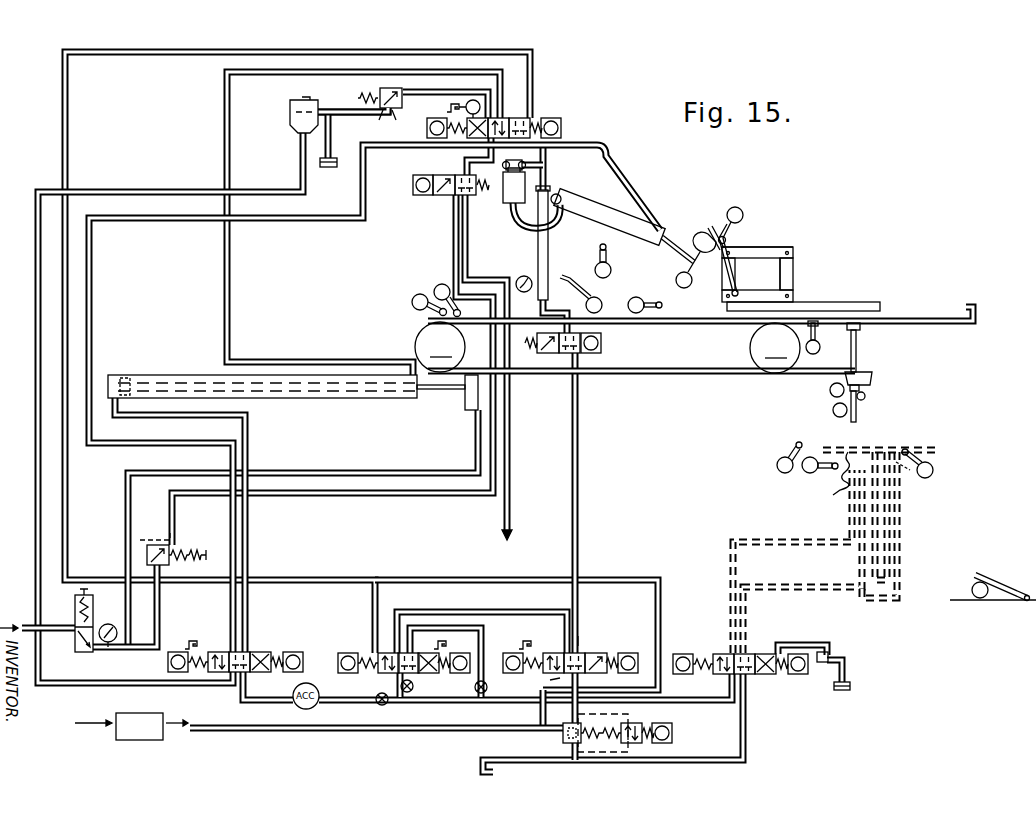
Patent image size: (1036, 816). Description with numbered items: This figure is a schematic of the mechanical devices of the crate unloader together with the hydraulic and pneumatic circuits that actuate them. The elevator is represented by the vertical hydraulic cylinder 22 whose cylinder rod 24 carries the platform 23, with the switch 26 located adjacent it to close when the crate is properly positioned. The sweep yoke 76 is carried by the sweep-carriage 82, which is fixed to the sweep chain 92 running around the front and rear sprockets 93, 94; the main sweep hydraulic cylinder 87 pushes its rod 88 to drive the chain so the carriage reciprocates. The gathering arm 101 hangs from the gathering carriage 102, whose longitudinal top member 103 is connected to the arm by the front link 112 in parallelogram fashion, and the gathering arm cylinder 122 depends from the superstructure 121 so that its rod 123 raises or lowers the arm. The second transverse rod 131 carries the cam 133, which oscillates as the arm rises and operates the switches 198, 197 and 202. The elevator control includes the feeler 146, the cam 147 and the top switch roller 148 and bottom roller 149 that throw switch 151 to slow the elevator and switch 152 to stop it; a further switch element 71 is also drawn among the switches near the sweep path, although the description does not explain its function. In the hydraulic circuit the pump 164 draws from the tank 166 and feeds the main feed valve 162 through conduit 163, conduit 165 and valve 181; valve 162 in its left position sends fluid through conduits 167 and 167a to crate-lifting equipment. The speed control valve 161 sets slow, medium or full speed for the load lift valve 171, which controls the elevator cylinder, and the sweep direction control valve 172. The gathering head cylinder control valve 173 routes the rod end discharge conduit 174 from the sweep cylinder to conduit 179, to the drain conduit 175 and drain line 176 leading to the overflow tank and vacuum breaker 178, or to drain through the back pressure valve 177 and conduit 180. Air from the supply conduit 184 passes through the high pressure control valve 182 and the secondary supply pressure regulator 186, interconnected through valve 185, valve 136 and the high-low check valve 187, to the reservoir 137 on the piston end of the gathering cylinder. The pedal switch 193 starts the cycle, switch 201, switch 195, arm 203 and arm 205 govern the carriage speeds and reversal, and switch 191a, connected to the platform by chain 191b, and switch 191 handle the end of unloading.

The vertical hydraulic cylinder 22 is at (897, 555).
The platform 23 is at (890, 450).
The cylinder rod 24 is at (912, 470).
The switch 26 is at (778, 453).
The limit switch 71 is at (599, 300).
The sweep yoke 76 is at (943, 313).
The sweep-carriage 82 is at (818, 325).
The main sweep hydraulic cylinder 87 is at (377, 400).
The rod 88 is at (450, 399).
The sweep chain 92 is at (697, 327).
The front sprocket 93 is at (775, 348).
The rear sprocket 94 is at (440, 347).
The gathering arm 101 is at (868, 302).
The gathering carriage 102 is at (766, 244).
The longitudinal top member 103 is at (795, 251).
The front link 112 is at (794, 282).
The superstructure 121 is at (547, 192).
The gathering arm cylinder 122 is at (605, 216).
The rod 123 is at (675, 242).
The second transverse rod 131 is at (726, 216).
The cam 133 is at (708, 226).
The valve 136 is at (440, 178).
The reservoir 137 is at (504, 202).
The feeler 146 is at (857, 334).
The cam 147 is at (868, 375).
The top switch roller 148 is at (865, 390).
The bottom roller 149 is at (862, 398).
The switch 151 is at (835, 415).
The switch 152 is at (830, 391).
The speed control valve 161 is at (361, 653).
The main feed valve 162 is at (592, 655).
The conduit 163 is at (292, 735).
The pump 164 is at (78, 719).
The conduit 165 is at (544, 712).
The tank 166 is at (140, 740).
The conduit 167 is at (550, 678).
The conduit 167a is at (578, 647).
The load lift valve 171 is at (770, 678).
The sweep direction control valve 172 is at (248, 652).
The gathering head cylinder control valve 173 is at (540, 118).
The rod end discharge conduit 174 is at (322, 362).
The drain conduit 175 is at (262, 222).
The drain line 176 is at (306, 178).
The back pressure valve 177 is at (365, 123).
The overflow tank and vacuum breaker 178 is at (288, 115).
The conduit 179 is at (602, 156).
The conduit 180 is at (342, 108).
The valve 181 is at (638, 714).
The high pressure control valve 182 is at (93, 619).
The supply conduit 184 is at (25, 626).
The valve 185 is at (603, 348).
The secondary supply pressure regulator 186 is at (187, 545).
The high-low check valve 187 is at (520, 162).
The switch 191 is at (934, 466).
The switch 191a is at (807, 474).
The chain 191b is at (835, 496).
The pedal switch 193 is at (1003, 577).
The switch 195 is at (812, 355).
The contact switch 197 is at (683, 288).
The switch 198 is at (741, 216).
The switch 201 is at (636, 297).
The switch 202 is at (595, 269).
The arm 203 is at (440, 287).
The arm 205 is at (412, 302).